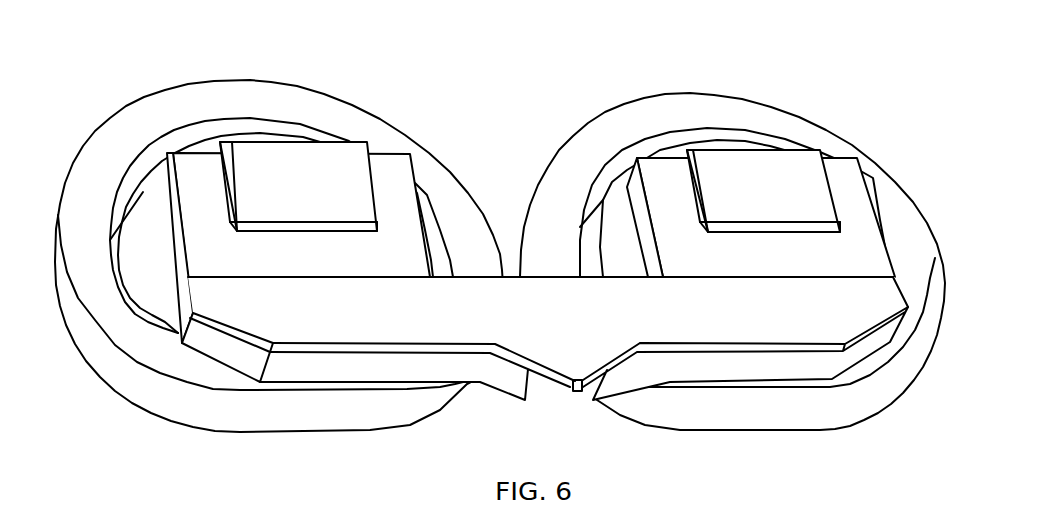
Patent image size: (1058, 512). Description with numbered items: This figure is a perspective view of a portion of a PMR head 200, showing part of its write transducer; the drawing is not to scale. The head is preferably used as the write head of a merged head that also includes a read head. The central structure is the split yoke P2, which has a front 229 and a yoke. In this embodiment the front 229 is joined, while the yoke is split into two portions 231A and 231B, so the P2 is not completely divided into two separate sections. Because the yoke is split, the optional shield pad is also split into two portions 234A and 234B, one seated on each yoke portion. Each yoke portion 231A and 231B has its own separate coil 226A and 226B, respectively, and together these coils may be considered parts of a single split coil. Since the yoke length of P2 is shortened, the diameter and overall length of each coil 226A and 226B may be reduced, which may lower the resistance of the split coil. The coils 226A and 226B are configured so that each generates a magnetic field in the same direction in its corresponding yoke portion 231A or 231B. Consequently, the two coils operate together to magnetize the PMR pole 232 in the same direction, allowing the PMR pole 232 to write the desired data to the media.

The PMR head 200 is at (522, 38).
The coil 226A is at (285, 239).
The coil 226B is at (732, 238).
The yoke portion 231A is at (143, 192).
The yoke portion 231B is at (872, 180).
The pad portion 234A is at (318, 143).
The pad portion 234B is at (750, 143).
The front of P2 229 is at (511, 410).
The PMR pole 232 is at (527, 367).